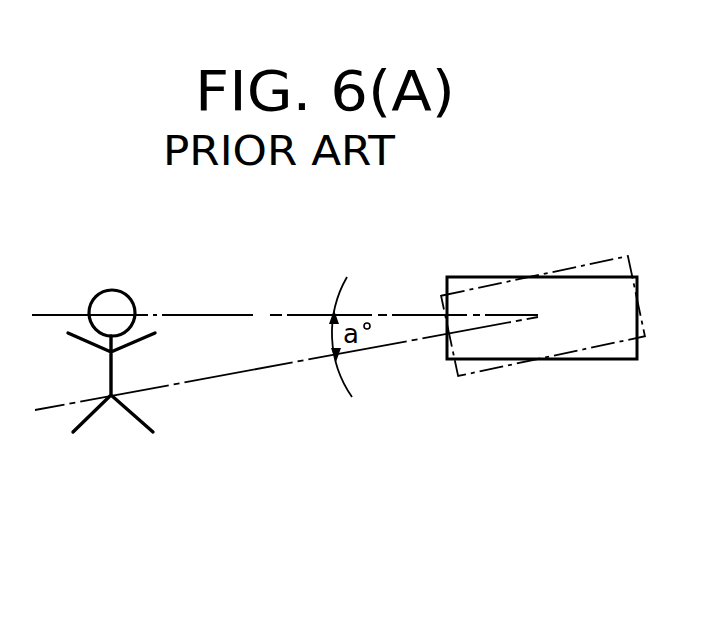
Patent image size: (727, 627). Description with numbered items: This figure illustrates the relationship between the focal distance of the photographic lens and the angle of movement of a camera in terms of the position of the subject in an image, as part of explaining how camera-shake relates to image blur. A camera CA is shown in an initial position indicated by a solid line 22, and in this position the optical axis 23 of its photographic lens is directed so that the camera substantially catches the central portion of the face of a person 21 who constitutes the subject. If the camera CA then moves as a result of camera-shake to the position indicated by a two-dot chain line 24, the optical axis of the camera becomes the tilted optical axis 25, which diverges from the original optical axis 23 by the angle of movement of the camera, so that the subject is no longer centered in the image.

The person 21 is at (100, 290).
The solid line 22 is at (593, 360).
The optical axis 23 is at (243, 313).
The two-dot chain line 24 is at (610, 257).
The optical axis 25 is at (248, 372).
The camera CA is at (498, 293).